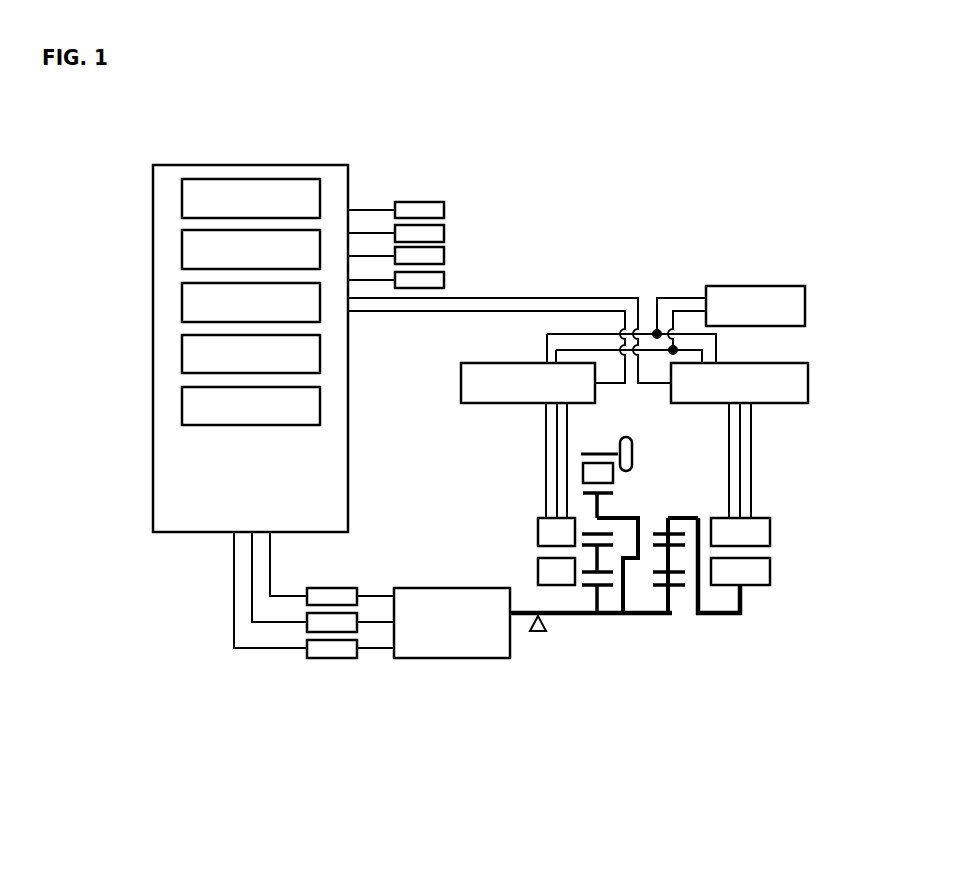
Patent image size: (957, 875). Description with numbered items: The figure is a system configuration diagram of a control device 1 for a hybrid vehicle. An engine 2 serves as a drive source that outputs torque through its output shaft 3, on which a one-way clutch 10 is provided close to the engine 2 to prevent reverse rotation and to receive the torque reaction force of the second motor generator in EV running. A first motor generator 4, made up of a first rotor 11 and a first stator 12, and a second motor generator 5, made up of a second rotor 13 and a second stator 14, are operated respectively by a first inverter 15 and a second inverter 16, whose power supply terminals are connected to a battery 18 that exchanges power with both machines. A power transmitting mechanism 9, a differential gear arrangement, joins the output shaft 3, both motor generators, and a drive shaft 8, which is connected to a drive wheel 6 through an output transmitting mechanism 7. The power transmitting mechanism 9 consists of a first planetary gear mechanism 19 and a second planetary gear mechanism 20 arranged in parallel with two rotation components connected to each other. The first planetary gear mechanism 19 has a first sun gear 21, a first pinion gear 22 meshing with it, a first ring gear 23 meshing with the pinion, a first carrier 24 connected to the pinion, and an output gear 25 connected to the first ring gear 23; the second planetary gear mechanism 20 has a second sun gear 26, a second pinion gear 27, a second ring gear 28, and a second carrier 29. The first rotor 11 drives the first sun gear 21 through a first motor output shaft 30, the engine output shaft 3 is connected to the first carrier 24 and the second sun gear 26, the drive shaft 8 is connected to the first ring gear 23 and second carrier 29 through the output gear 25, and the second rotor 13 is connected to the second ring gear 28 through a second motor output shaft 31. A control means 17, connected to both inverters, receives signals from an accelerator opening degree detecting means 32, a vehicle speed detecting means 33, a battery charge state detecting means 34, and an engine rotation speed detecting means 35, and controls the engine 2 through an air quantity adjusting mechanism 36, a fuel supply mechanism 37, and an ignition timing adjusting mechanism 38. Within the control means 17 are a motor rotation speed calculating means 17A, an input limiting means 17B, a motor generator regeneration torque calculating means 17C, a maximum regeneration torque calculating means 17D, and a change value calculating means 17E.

The control device 1 is at (716, 197).
The engine 2 is at (418, 588).
The output shaft 3 is at (580, 615).
The first motor generator 4 is at (518, 520).
The second motor generator 5 is at (811, 518).
The drive wheel 6 is at (633, 449).
The output transmitting mechanism 7 is at (614, 476).
The drive shaft 8 is at (598, 453).
The power transmitting mechanism 9 is at (793, 490).
The one-way clutch 10 is at (537, 633).
The first rotor 11 is at (538, 567).
The first stator 12 is at (538, 537).
The second rotor 13 is at (770, 570).
The second stator 14 is at (770, 537).
The first inverter 15 is at (461, 383).
The second inverter 16 is at (808, 384).
The control means 17 is at (178, 165).
The motor rotation speed calculating means 17A is at (182, 196).
The input limiting means 17B is at (182, 247).
The motor generator regeneration torque calculating means 17C is at (182, 300).
The maximum regeneration torque calculating means 17D is at (182, 351).
The change value calculating means 17E is at (182, 401).
The battery 18 is at (805, 306).
The first planetary gear mechanism 19 is at (604, 662).
The second planetary gear mechanism 20 is at (703, 650).
The first sun gear 21 is at (605, 586).
The first pinion gear 22 is at (609, 574).
The first ring gear 23 is at (613, 540).
The first carrier 24 is at (615, 545).
The output gear 25 is at (616, 492).
The second sun gear 26 is at (680, 576).
The second pinion gear 27 is at (676, 548).
The second ring gear 28 is at (660, 524).
The second carrier 29 is at (616, 518).
The first motor output shaft 30 is at (573, 613).
The second motor output shaft 31 is at (724, 617).
The accelerator opening degree detecting means 32 is at (445, 210).
The vehicle speed detecting means 33 is at (445, 234).
The battery charge state detecting means 34 is at (445, 256).
The engine rotation speed detecting means 35 is at (445, 280).
The air quantity adjusting mechanism 36 is at (333, 588).
The fuel supply mechanism 37 is at (307, 626).
The ignition timing adjusting mechanism 38 is at (333, 659).